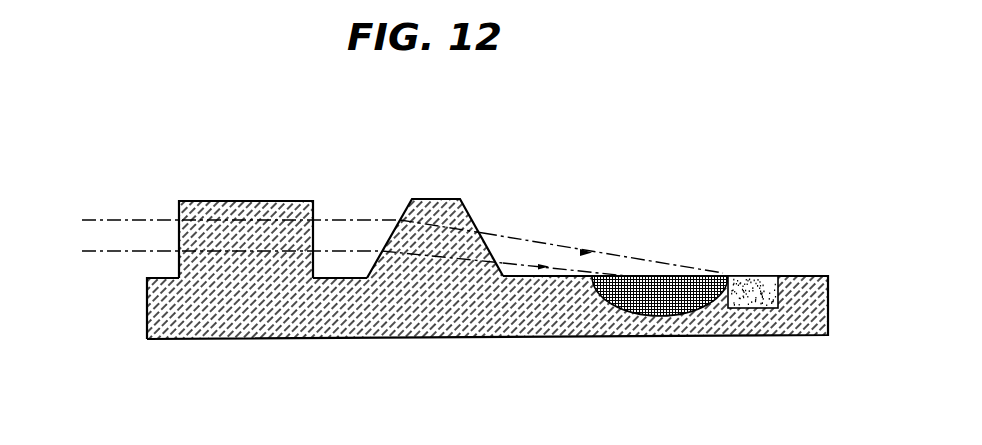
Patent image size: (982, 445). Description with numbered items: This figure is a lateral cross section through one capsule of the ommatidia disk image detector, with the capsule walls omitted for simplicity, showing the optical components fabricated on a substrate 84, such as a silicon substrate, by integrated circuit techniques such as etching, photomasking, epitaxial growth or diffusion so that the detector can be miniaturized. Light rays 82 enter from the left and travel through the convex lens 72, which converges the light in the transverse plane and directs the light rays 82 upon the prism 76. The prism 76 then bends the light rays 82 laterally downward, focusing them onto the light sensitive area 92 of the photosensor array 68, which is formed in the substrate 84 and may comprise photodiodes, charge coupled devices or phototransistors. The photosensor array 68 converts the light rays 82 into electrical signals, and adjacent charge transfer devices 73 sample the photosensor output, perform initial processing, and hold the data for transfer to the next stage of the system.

The photosensor array 68 is at (633, 273).
The lens 72 is at (236, 200).
The charge transfer devices 73 is at (768, 275).
The prism 76 is at (470, 212).
The light rays 82 is at (105, 220).
The substrate 84 is at (428, 315).
The light sensitive area 92 is at (710, 273).